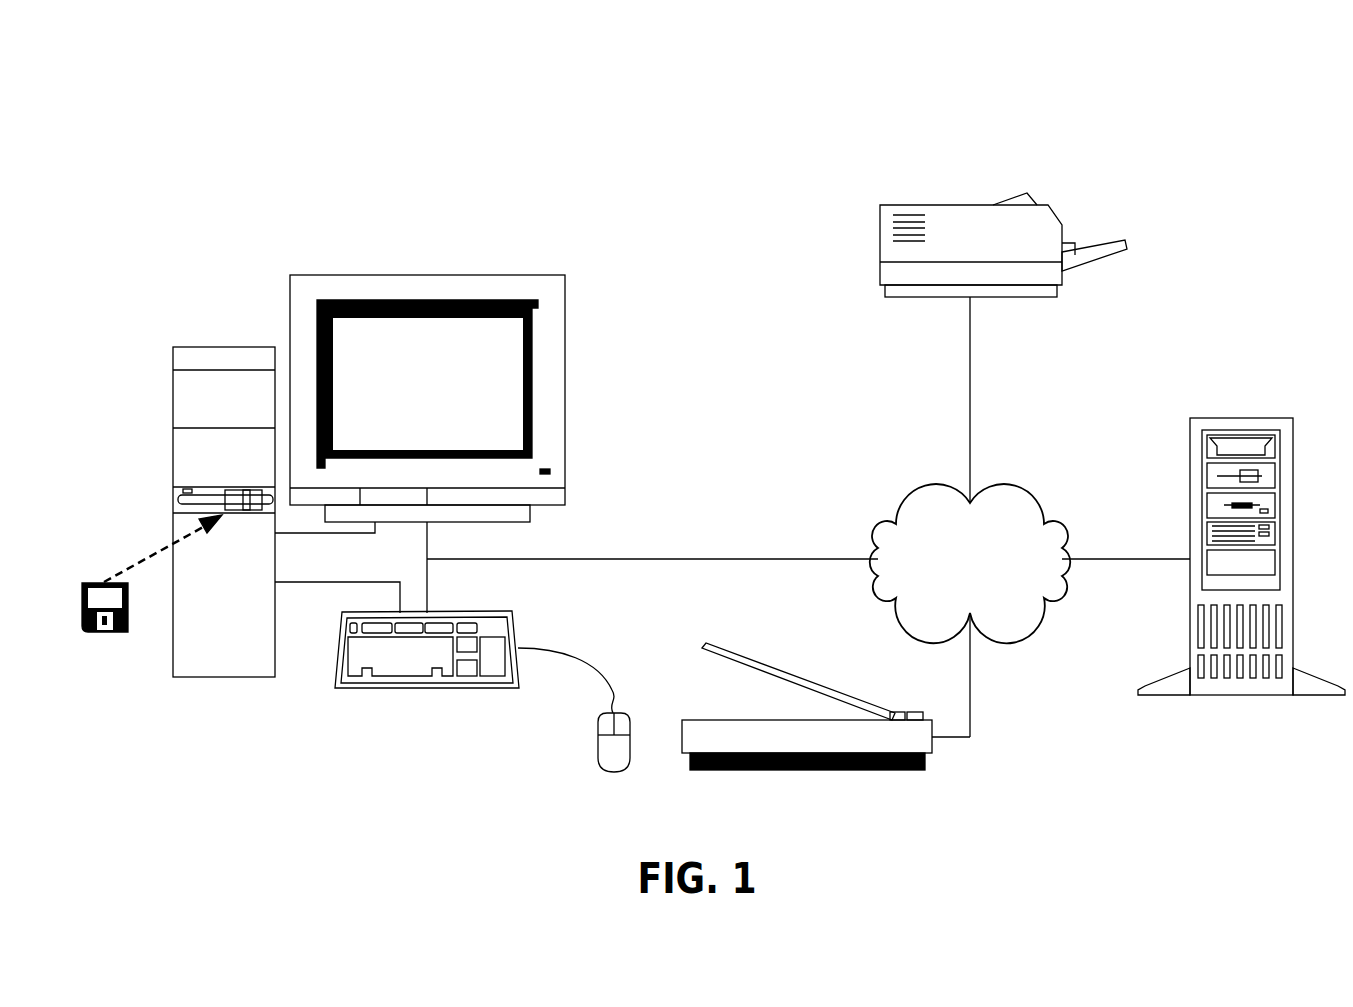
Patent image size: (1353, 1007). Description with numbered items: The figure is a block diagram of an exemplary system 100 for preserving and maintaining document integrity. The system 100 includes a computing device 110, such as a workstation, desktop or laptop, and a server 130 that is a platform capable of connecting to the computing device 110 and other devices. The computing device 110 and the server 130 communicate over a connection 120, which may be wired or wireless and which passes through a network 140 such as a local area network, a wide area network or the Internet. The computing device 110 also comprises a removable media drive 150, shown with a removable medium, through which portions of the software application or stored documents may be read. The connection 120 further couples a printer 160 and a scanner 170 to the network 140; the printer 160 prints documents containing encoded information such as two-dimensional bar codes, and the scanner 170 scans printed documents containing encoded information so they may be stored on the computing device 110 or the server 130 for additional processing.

The system 100 is at (189, 57).
The computing device 110 is at (401, 497).
The connection 120 is at (808, 517).
The server 130 is at (1241, 525).
The network 140 is at (944, 573).
The removable media drive 150 is at (152, 593).
The printer 160 is at (953, 245).
The scanner 170 is at (788, 724).